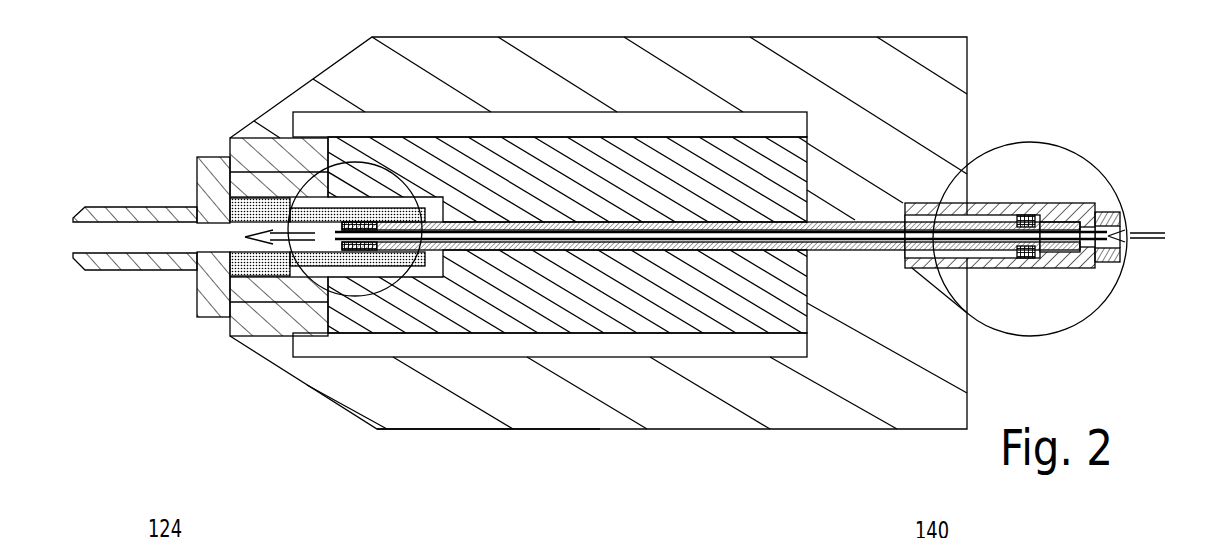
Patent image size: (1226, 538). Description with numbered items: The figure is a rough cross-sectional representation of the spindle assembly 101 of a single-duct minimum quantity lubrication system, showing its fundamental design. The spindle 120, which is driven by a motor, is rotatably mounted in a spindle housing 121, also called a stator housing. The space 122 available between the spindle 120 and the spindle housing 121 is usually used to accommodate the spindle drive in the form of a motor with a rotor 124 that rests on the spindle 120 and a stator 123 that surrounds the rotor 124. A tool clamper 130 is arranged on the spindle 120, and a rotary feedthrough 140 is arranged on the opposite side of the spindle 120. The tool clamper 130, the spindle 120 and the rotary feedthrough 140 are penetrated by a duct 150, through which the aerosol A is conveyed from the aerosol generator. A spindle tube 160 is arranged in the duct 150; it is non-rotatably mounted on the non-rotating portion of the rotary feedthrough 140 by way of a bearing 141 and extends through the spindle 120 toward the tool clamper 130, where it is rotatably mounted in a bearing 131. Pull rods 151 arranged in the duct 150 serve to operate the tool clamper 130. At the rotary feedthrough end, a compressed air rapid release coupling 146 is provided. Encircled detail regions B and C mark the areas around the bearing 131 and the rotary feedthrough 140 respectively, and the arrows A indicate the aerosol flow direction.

The spindle assembly 101 is at (1004, 373).
The spindle 120 is at (663, 440).
The spindle housing 121 is at (468, 408).
The space 122 is at (745, 345).
The stator 123 is at (372, 377).
The rotor 124 is at (505, 300).
The tool clamper 130 is at (145, 283).
The bearing 131 is at (388, 196).
The rotary feedthrough 140 is at (1048, 281).
The bearing 141 is at (1083, 220).
The compressed air rapid release coupling 146 is at (1134, 216).
The duct 150 is at (835, 254).
The pull rods 151 is at (663, 222).
The spindle tube 160 is at (853, 218).
The aerosol A is at (292, 274).
The detail region B is at (300, 176).
The detail region C is at (1080, 147).